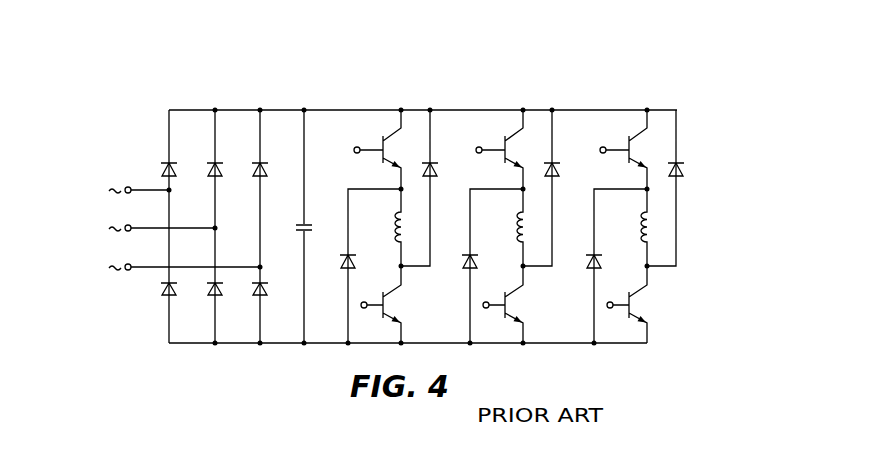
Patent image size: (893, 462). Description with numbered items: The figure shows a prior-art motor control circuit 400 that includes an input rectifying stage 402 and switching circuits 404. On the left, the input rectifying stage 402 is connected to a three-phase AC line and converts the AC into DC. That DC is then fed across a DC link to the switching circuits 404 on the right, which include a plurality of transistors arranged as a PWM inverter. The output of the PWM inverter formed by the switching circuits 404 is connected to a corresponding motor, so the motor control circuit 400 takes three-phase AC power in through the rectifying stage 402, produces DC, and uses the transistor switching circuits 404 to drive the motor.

The motor control circuit 400 is at (354, 70).
The input rectifying stage 402 is at (280, 102).
The switching circuits 404 is at (677, 98).